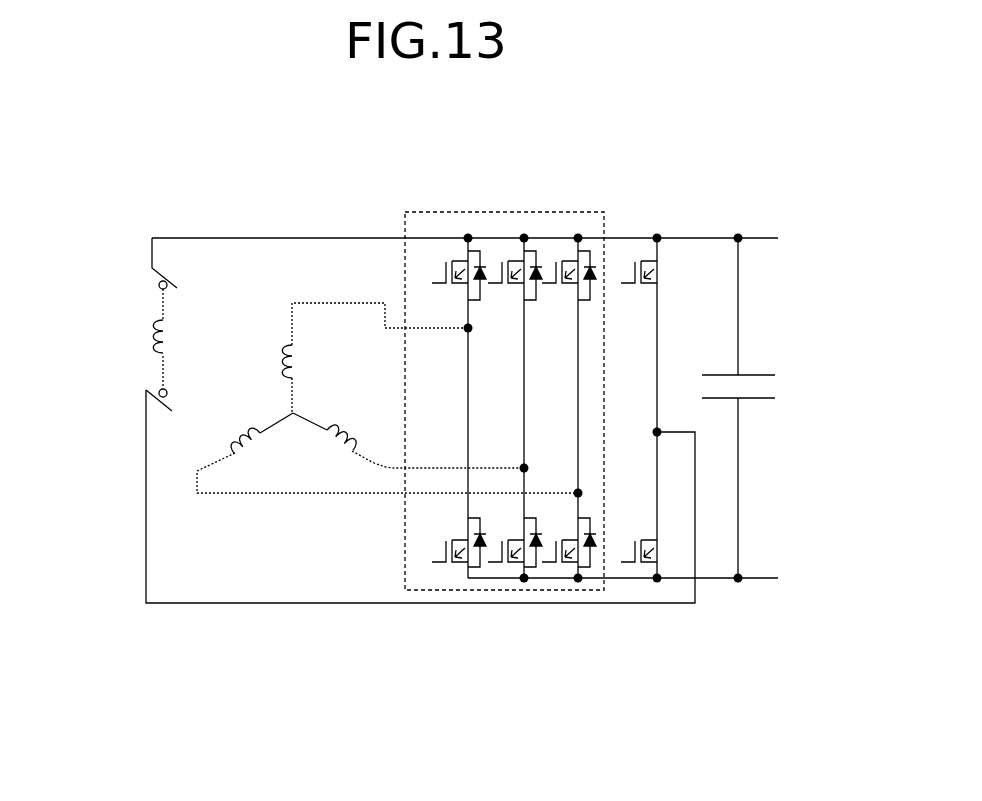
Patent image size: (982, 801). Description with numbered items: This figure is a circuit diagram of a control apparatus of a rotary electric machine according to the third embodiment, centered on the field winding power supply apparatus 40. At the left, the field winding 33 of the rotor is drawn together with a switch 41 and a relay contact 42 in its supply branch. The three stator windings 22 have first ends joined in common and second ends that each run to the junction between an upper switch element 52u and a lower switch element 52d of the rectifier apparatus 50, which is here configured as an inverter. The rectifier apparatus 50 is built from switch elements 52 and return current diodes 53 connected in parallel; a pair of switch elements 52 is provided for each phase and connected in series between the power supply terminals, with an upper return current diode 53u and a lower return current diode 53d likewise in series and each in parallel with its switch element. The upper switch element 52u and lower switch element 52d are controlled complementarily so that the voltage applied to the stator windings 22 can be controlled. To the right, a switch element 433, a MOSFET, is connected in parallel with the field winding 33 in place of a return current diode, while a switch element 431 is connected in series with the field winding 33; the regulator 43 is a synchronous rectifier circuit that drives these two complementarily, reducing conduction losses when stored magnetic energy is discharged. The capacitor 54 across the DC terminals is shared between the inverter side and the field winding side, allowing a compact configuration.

The field winding power supply apparatus 40 is at (131, 372).
The switch 41 is at (152, 280).
The relay contact 42 is at (175, 283).
The field winding 33 is at (172, 330).
The stator windings 22 is at (297, 348).
The rectifier apparatus 50 is at (597, 210).
The switch elements 52 is at (400, 178).
The upper switch element 52u is at (458, 258).
The lower switch element 52d is at (462, 566).
The return current diodes 53 is at (458, 355).
The upper return current diode 53u is at (474, 305).
The lower return current diode 53d is at (487, 520).
The regulator 43 is at (682, 422).
The switch element 433 is at (655, 245).
The switch element 431 is at (657, 552).
The capacitor 54 is at (758, 400).